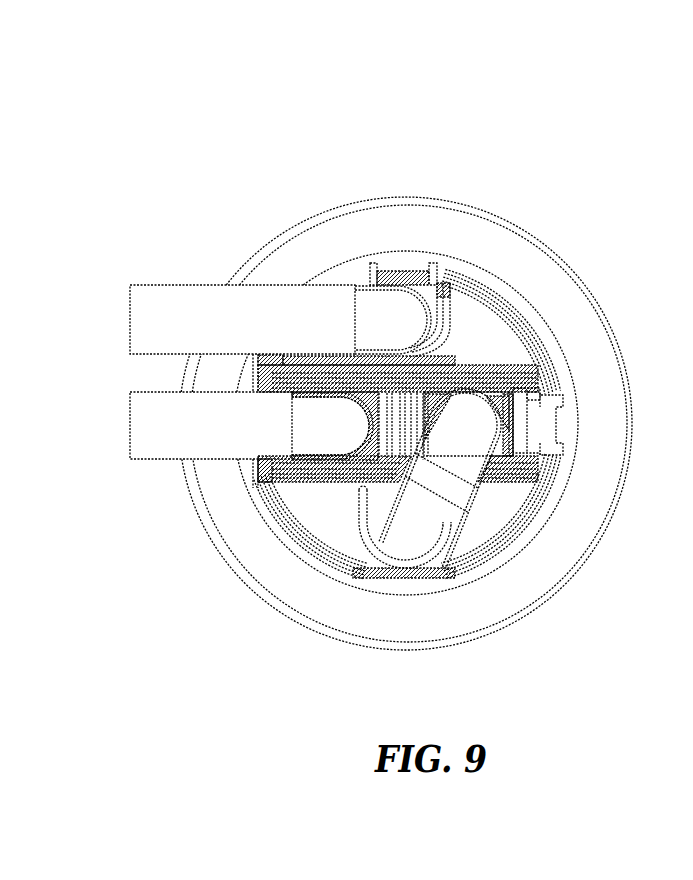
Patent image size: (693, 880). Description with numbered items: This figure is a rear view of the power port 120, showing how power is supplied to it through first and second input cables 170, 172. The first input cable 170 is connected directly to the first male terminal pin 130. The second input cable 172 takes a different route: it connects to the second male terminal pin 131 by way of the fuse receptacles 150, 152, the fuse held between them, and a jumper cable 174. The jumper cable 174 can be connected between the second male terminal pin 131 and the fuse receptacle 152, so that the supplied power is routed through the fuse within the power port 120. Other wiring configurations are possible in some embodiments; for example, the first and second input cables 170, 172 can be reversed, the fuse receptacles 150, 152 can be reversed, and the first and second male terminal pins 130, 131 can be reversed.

The power port 120 is at (514, 146).
The first male terminal pin 130 is at (437, 268).
The second male terminal pin 131 is at (353, 575).
The fuse receptacle 150 is at (262, 505).
The fuse receptacle 152 is at (540, 357).
The first input cable 170 is at (166, 302).
The second input cable 172 is at (175, 443).
The jumper cable 174 is at (430, 510).